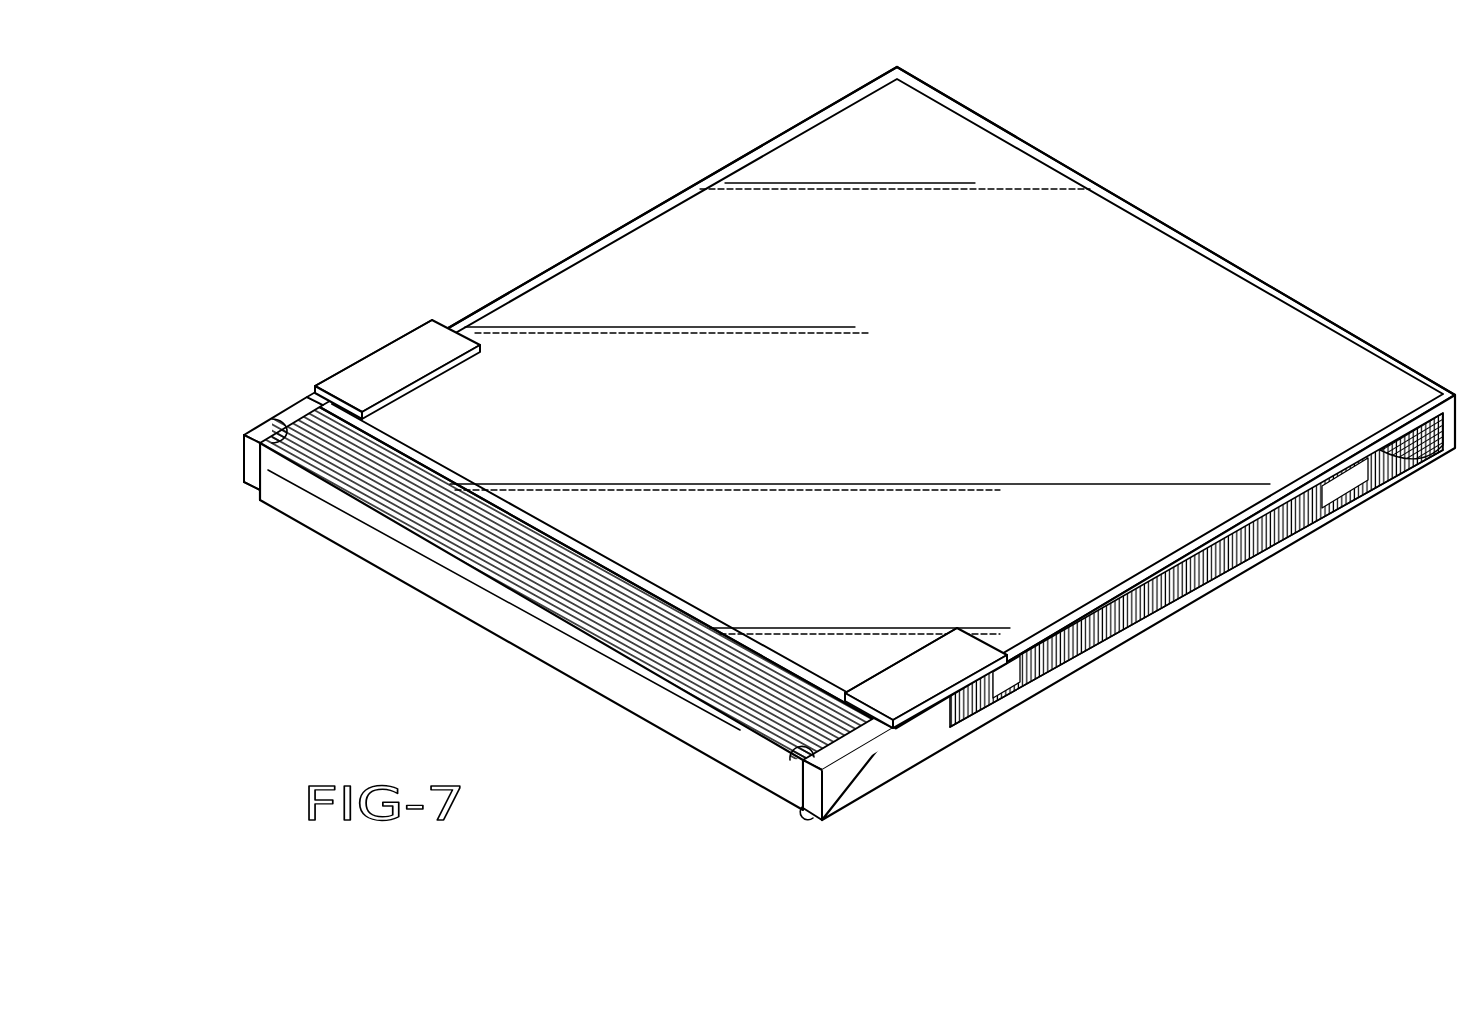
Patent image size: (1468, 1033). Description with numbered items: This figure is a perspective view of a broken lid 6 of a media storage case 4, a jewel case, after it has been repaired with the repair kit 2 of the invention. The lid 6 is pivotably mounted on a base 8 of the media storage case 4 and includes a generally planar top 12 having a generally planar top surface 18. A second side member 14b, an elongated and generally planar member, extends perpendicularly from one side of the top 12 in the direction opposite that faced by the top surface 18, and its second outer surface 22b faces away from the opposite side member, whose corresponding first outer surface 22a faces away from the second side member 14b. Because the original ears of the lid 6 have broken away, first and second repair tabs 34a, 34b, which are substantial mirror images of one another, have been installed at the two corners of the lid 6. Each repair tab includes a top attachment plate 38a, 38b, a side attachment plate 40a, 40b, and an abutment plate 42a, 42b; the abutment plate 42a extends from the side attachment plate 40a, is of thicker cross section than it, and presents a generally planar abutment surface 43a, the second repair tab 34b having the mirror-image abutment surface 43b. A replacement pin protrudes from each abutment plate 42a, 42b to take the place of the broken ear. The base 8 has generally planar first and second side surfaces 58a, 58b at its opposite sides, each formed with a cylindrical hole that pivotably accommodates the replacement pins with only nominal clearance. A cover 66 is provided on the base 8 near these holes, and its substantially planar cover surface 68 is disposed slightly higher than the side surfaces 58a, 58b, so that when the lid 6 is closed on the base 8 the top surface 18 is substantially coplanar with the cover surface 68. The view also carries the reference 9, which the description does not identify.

The repair kit 2 is at (338, 277).
The media storage case 4 is at (553, 700).
The lid 6 is at (1150, 210).
The base 8 is at (253, 418).
The section line 9- 9 is at (330, 378).
The top 12 is at (1196, 240).
The top surface 18 is at (1237, 305).
The first outer surface 22a is at (662, 203).
The second outer surface 22b is at (1155, 606).
The first repair tab 34a is at (434, 318).
The second repair tab 34b is at (968, 626).
The top attachment plate 38a is at (438, 357).
The top attachment plate 38b is at (950, 650).
The side attachment plate 40a is at (316, 403).
The side attachment plate 40b is at (908, 764).
The abutment plate 42a is at (247, 465).
The abutment plate 42b is at (838, 815).
The abutment surface 43a is at (271, 430).
The right semicircular recess 43b is at (795, 750).
The first side surface 58a is at (245, 482).
The second side surface 58b is at (808, 818).
The cover 66 is at (515, 600).
The cover surface 68 is at (748, 712).
The second side member 14b is at (1255, 558).